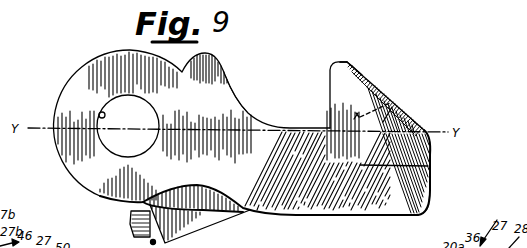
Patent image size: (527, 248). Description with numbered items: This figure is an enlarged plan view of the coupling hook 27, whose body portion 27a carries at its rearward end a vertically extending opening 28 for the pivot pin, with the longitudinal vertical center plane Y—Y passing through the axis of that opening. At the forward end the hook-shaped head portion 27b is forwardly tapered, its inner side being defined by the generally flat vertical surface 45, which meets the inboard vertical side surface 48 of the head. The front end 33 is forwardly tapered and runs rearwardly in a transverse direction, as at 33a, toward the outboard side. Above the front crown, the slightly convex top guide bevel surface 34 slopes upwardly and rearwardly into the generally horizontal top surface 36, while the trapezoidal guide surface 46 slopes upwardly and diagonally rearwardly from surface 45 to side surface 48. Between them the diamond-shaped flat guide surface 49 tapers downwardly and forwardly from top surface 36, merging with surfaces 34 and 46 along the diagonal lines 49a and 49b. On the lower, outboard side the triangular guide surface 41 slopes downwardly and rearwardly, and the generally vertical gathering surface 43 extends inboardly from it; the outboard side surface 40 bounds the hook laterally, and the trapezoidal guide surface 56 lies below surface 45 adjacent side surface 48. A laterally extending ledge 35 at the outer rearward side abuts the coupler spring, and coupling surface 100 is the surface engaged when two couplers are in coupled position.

The coupling hook 27 is at (131, 46).
The vertically extending opening 28 is at (100, 113).
The body portion 27a is at (239, 108).
The coupling surface 100 is at (330, 99).
The inboard vertical side surface 48 is at (346, 64).
The guide surface 56 is at (360, 70).
The trapezoidal-shaped guide surface 46 is at (381, 86).
The vertical surface 45 is at (390, 98).
The line 49b is at (402, 106).
The top surface 36 is at (270, 177).
The diamond-shaped flat guide surface 49 is at (410, 115).
The line 49a is at (416, 125).
The hook-shaped head portion 27b is at (436, 140).
The top guide bevel surface 34 is at (432, 147).
The guide or gathering surface 43 is at (412, 172).
The front end 33 is at (426, 185).
The triangularly shaped guide surface 41 is at (429, 200).
The transverse rearward extension of front end 33a is at (422, 207).
The outboard side surface 40 is at (392, 216).
The laterally extending ledge 35 is at (190, 217).